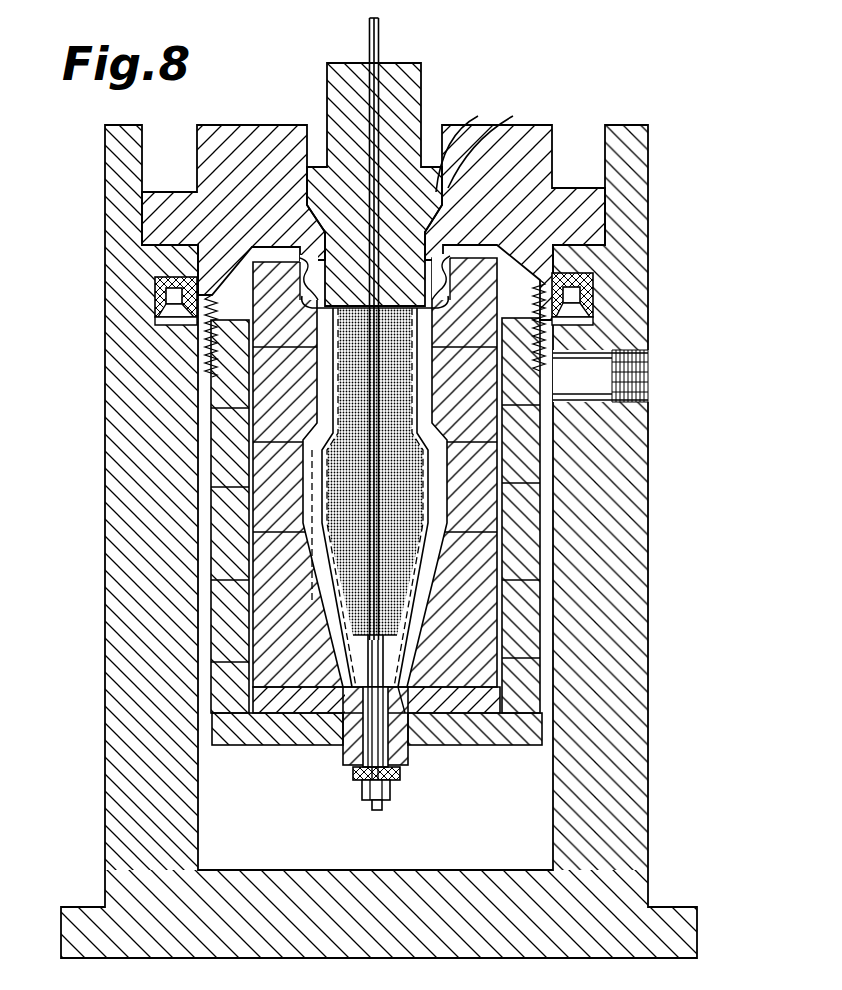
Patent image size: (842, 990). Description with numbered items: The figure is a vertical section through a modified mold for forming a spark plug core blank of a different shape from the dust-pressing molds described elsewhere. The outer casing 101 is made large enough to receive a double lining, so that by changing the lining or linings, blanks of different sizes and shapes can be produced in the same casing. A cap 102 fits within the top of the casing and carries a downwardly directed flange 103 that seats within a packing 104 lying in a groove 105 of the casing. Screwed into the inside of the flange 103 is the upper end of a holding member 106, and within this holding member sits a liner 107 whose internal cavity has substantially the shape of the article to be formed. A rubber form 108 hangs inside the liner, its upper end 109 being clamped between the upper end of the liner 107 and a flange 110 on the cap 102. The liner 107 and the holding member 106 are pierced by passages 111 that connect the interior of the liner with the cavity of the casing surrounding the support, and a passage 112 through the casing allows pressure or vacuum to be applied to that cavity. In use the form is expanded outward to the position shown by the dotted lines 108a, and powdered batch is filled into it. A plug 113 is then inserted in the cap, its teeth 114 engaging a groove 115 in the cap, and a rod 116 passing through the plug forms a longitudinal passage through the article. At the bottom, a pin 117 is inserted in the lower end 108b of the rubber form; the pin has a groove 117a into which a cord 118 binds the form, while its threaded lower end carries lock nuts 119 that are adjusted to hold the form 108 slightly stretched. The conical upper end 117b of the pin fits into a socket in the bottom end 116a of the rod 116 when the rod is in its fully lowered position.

The casing 101 is at (640, 566).
The cap 102 is at (228, 132).
The downwardly directed flange 103 is at (537, 284).
The packing 104 is at (590, 282).
The groove 105 is at (600, 325).
The holding member 106 is at (262, 742).
The liner 107 is at (457, 716).
The rubber form 108 is at (375, 491).
The expanded position of rubber form 108a is at (299, 525).
The lower end of rubber form 108b is at (406, 752).
The upper end of rubber form 109 is at (446, 254).
The flange 110 is at (304, 252).
The passages 111 is at (312, 700).
The passage 112 is at (598, 380).
The plug 113 is at (412, 100).
The teeth 114 is at (467, 143).
The groove 115 is at (494, 141).
The rod 116 is at (381, 42).
The bottom end of rod 116a is at (393, 720).
The pin 117 is at (374, 812).
The groove 117a is at (360, 772).
The conical upper end of pin 117b is at (360, 701).
The cord 118 is at (393, 790).
The lock nuts 119 is at (384, 806).